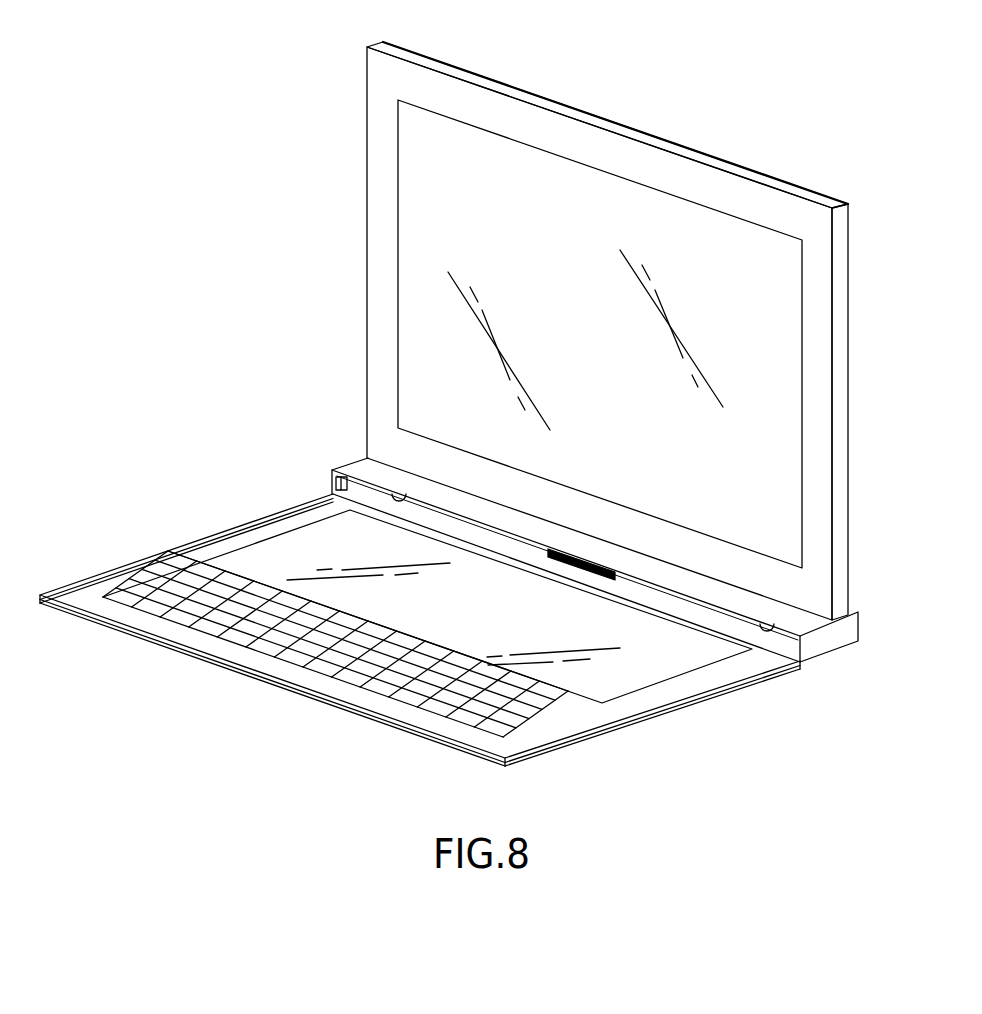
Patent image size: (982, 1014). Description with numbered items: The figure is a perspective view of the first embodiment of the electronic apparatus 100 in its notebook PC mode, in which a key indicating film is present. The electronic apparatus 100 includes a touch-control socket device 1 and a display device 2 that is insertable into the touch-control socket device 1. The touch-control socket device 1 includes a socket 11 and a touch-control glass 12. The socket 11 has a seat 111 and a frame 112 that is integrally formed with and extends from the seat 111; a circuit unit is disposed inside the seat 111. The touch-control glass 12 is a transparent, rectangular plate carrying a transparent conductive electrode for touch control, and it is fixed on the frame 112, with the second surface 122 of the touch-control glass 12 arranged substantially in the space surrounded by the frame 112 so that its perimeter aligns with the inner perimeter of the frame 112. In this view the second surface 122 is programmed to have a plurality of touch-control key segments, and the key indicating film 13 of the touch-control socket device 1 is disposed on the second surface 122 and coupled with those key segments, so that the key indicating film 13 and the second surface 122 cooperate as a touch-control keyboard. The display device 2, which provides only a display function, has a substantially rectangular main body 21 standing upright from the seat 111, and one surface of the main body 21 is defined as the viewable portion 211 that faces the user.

The electronic apparatus 100 is at (197, 48).
The touch-control socket device 1 is at (188, 525).
The socket 11 is at (881, 699).
The seat 111 is at (827, 641).
The frame 112 is at (713, 675).
The touch-control glass 12 is at (273, 476).
The second surface 122 is at (284, 553).
The key indicating film 13 is at (141, 578).
The display device 2 is at (340, 211).
The main body 21 is at (382, 168).
The viewable portion 211 is at (410, 252).